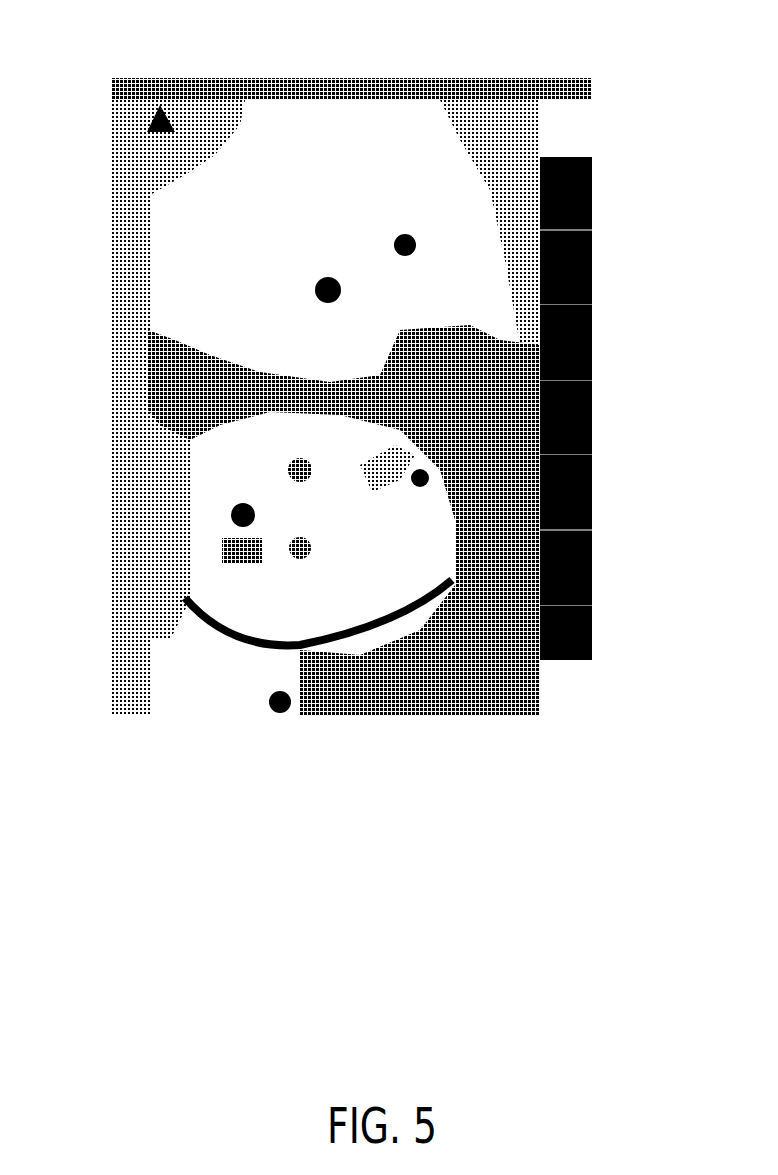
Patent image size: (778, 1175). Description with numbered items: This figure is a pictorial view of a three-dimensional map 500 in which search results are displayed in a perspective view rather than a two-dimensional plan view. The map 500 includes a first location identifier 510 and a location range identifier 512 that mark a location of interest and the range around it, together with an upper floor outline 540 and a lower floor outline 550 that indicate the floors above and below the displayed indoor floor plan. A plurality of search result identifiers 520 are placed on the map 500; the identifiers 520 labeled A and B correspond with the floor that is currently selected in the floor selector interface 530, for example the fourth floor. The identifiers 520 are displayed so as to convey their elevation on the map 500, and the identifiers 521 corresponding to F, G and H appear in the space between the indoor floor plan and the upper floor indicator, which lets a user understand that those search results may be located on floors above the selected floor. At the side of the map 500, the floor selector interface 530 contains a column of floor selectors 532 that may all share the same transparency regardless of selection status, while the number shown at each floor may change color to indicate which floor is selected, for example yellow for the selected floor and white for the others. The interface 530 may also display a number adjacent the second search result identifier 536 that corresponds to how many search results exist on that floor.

The three-dimensional map 500 is at (377, 40).
The first location identifier 510 is at (345, 550).
The location range identifier 512 is at (358, 553).
The search result identifiers 520 is at (238, 510).
The identifiers 521 is at (312, 290).
The floor selector interface 530 is at (640, 413).
The floor selectors 532 is at (593, 325).
The second search result identifier 536 is at (593, 497).
The upper floor outline 540 is at (148, 188).
The lower floor outline 550 is at (204, 630).